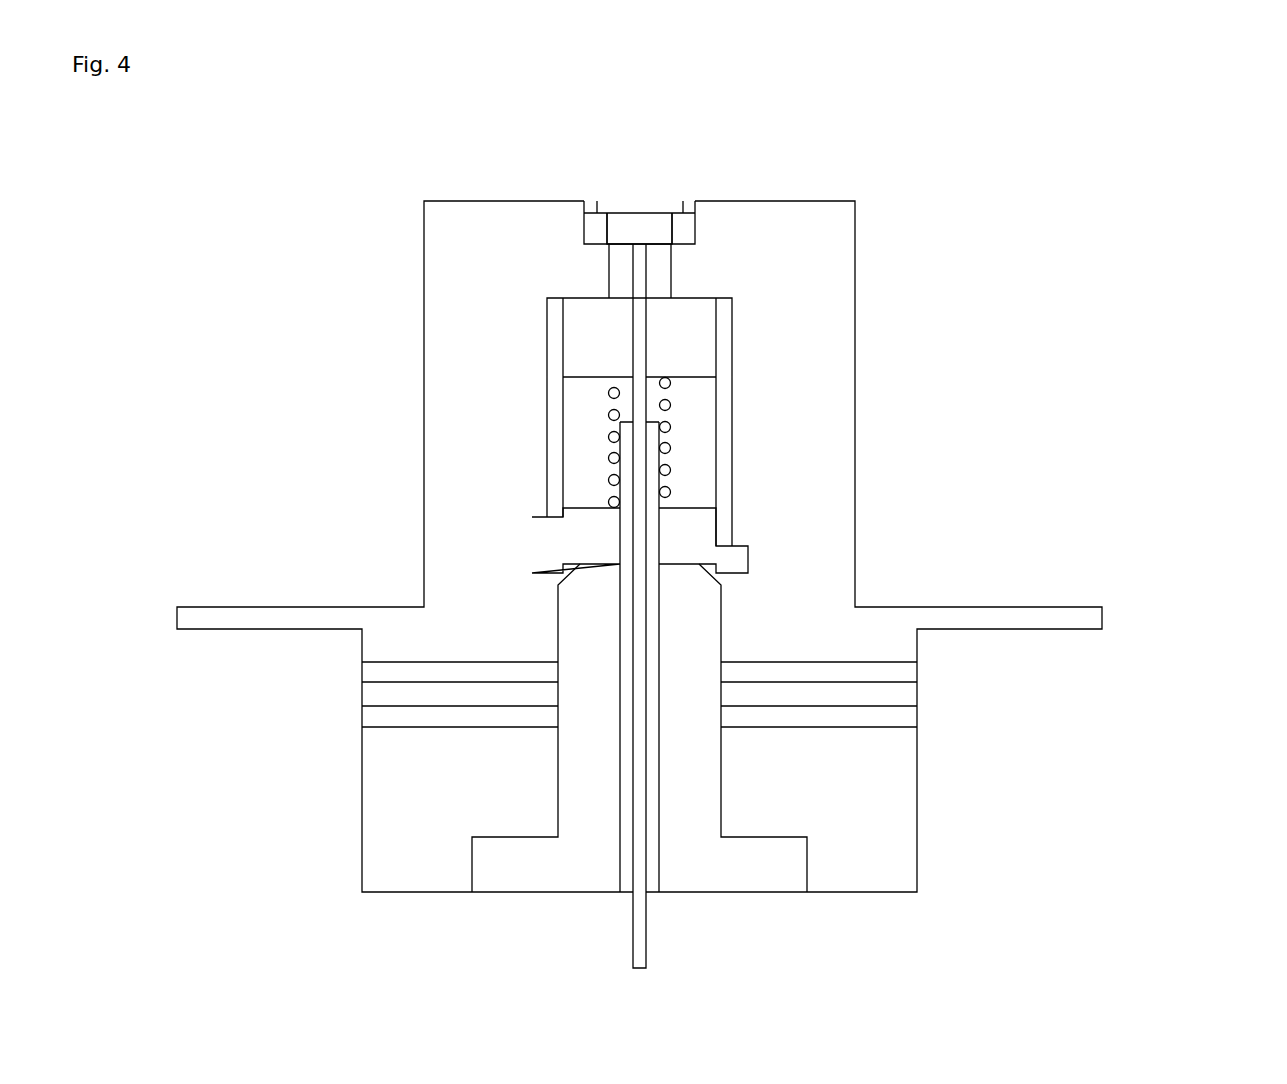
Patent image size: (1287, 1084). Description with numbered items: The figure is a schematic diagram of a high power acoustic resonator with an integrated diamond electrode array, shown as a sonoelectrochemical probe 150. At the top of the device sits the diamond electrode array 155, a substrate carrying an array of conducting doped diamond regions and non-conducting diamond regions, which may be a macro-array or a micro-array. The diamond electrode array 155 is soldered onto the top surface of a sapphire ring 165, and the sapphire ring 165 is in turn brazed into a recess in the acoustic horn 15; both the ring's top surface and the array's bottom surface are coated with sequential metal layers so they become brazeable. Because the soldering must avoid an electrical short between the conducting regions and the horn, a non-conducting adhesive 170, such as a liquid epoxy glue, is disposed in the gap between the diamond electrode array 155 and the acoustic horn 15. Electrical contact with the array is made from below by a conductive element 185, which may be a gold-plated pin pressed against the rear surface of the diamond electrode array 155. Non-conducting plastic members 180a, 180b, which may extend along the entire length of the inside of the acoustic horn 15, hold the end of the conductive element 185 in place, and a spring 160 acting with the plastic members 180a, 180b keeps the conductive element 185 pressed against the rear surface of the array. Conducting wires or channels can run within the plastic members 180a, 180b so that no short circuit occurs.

The acoustic horn 15 is at (506, 396).
The sonoelectrochemical probe 150 is at (953, 343).
The diamond electrode array 155 is at (633, 201).
The spring 160 is at (663, 408).
The sapphire ring 165 is at (697, 222).
The non-conducting adhesive 170 is at (582, 201).
The non-conducting plastic member 180a is at (563, 345).
The non-conducting plastic member 180b is at (558, 535).
The conductive element 185 is at (610, 228).